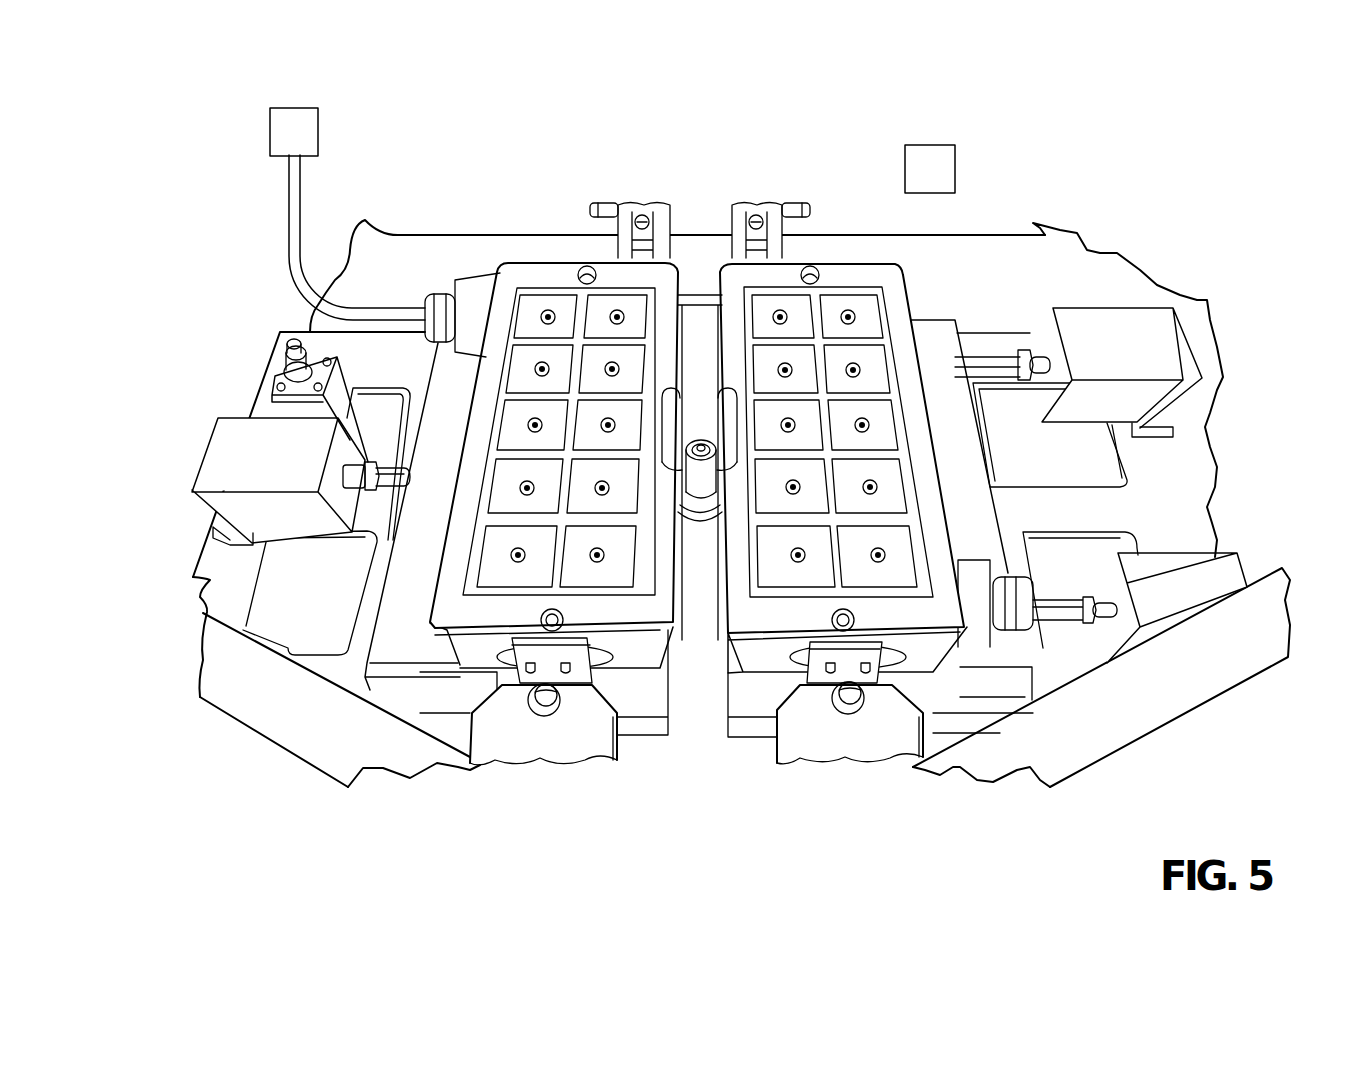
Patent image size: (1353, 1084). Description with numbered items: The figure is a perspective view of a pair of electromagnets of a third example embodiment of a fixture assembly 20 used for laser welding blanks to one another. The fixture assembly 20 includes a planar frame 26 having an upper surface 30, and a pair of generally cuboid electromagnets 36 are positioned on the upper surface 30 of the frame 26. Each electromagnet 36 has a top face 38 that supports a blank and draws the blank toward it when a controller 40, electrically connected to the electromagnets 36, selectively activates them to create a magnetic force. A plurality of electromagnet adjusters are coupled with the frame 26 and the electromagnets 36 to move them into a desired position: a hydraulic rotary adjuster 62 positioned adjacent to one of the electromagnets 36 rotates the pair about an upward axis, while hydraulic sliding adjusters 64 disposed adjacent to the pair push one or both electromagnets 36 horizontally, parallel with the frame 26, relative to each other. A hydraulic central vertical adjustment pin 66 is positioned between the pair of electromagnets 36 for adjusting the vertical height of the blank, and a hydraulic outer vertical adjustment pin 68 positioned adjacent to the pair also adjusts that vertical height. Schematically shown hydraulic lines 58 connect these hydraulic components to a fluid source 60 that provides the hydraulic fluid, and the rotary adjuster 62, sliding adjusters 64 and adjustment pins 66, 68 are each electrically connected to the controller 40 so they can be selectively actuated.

The fixture assembly 20 is at (1098, 226).
The frame 26 is at (286, 772).
The upper surface 30 is at (208, 582).
The electromagnet 36 is at (457, 540).
The top face 38 is at (523, 277).
The controller 40 is at (912, 279).
The hydraulic lines 58 is at (290, 240).
The fluid source 60 is at (294, 132).
The hydraulic rotary adjuster 62 is at (232, 467).
The hydraulic sliding adjuster 64 is at (1127, 323).
The central vertical adjustment pin 66 is at (702, 442).
The outer vertical adjustment pin 68 is at (292, 352).